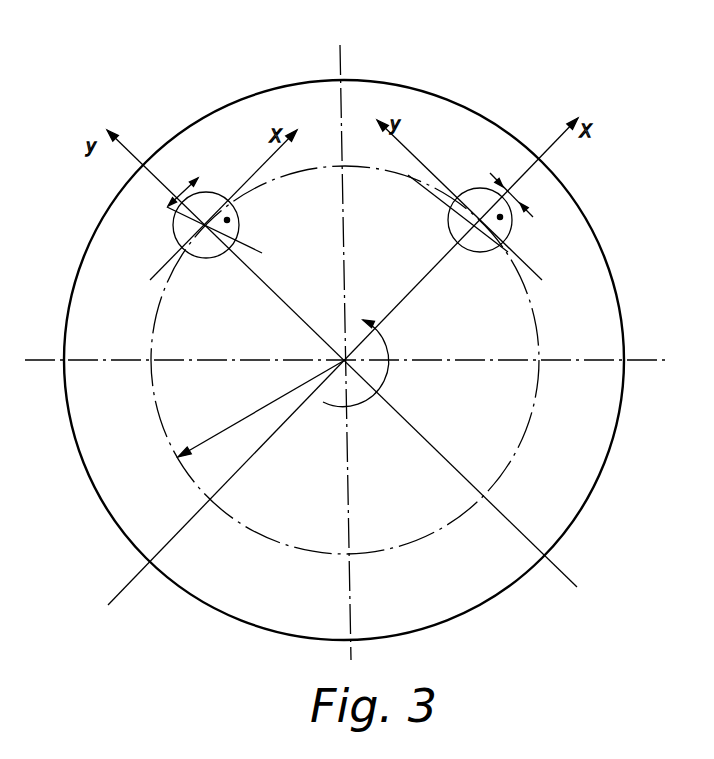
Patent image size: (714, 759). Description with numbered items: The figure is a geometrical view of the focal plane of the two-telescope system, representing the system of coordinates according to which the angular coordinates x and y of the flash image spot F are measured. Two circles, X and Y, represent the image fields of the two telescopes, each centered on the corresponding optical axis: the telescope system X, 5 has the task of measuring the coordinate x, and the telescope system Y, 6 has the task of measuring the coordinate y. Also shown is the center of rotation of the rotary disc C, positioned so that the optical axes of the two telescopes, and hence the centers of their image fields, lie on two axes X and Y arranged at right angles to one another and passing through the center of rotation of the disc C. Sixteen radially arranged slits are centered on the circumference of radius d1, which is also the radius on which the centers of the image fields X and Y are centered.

The telescope system X 5 is at (170, 154).
The telescope system Y 6 is at (499, 152).
The flash image spot F is at (229, 221).
The center of rotation of the rotary disc C is at (435, 398).
The radius of the slit circumference d1 is at (261, 408).